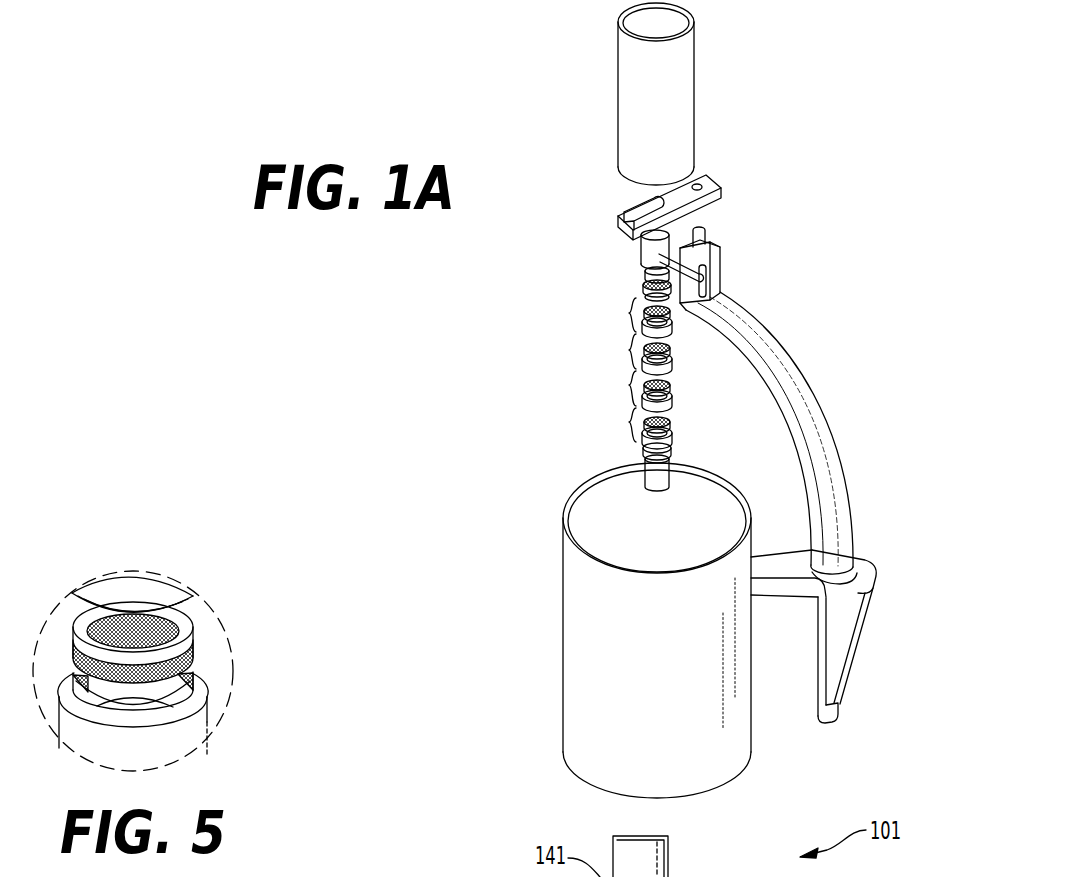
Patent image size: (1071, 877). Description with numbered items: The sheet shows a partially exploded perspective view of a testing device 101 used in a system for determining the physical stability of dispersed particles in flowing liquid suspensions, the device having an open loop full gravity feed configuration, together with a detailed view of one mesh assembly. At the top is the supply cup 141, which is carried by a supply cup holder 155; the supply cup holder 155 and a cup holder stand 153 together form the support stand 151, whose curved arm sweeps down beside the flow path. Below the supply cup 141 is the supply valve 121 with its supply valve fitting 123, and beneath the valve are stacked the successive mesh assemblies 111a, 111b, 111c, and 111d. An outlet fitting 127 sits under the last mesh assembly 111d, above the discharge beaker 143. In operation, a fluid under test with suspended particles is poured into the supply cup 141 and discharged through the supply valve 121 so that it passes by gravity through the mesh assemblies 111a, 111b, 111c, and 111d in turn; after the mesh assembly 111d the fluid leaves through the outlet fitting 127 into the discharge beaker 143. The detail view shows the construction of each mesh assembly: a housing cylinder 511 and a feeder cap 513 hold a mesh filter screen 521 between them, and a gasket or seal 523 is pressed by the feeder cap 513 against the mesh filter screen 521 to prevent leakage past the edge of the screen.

In FIG. 1A, the testing device 101 is at (860, 69).
In FIG. 1A, the supply cup 141 is at (633, 59).
In FIG. 1A, the supply cup holder 155 is at (713, 212).
In FIG. 1A, the supply valve 121 is at (642, 255).
In FIG. 1A, the supply valve fitting 123 is at (643, 265).
In FIG. 1A, the mesh assembly 111a is at (633, 313).
In FIG. 1A, the mesh assembly 111b is at (633, 350).
In FIG. 1A, the mesh assembly 111c is at (633, 385).
In FIG. 1A, the mesh assembly 111d is at (633, 422).
In FIG. 1A, the outlet fitting 127 is at (653, 473).
In FIG. 1A, the discharge beaker 143 is at (562, 566).
In FIG. 1A, the support stand 151 is at (742, 300).
In FIG. 1A, the cup holder stand 153 is at (830, 413).
In FIG. 5, the feeder cap 513 is at (193, 596).
In FIG. 5, the gasket or seal 523 is at (195, 623).
In FIG. 5, the mesh filter screen 521 is at (172, 675).
In FIG. 5, the housing cylinder 511 is at (213, 717).